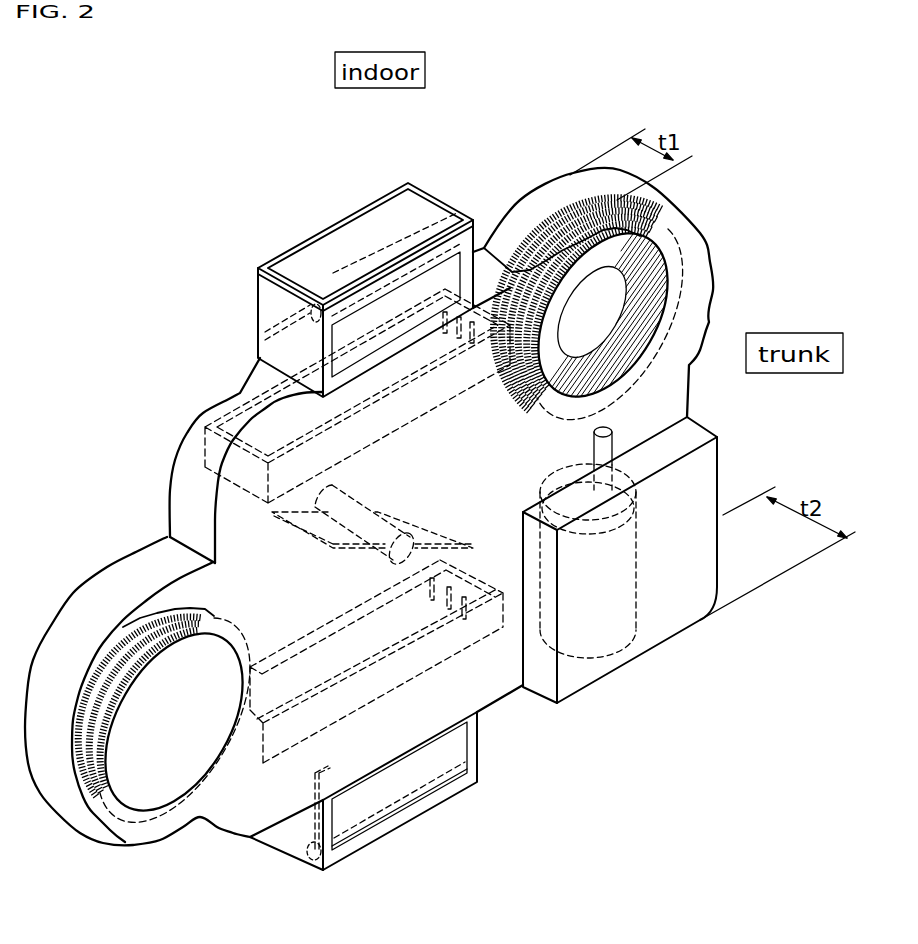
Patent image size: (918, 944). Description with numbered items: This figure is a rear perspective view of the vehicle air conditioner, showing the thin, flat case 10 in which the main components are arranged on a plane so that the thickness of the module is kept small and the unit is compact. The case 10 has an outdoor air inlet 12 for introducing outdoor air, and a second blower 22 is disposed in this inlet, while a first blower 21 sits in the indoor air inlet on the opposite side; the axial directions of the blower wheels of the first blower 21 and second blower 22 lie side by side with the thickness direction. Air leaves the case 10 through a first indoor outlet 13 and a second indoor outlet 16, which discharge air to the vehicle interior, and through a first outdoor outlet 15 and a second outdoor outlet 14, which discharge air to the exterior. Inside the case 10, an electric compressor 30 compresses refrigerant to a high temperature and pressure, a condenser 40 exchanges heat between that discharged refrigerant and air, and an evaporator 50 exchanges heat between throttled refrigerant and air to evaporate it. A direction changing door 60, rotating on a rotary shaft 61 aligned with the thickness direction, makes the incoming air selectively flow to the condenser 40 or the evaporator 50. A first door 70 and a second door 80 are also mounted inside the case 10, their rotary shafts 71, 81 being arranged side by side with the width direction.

The case 10 is at (168, 512).
The outdoor air inlet 12 is at (604, 312).
The first indoor outlet 13 is at (368, 234).
The second outdoor outlet 14 is at (392, 787).
The first outdoor outlet 15 is at (422, 288).
The second indoor outlet 16 is at (351, 870).
The first blower 21 is at (128, 620).
The second blower 22 is at (660, 305).
The compressor 30 is at (628, 633).
The condenser 40 is at (212, 447).
The evaporator 50 is at (487, 633).
The direction changing door 60 is at (313, 532).
The rotary shaft 61 is at (407, 537).
The first door 70 is at (290, 317).
The rotary shaft 71 is at (317, 303).
The second door 80 is at (315, 790).
The rotary shaft 81 is at (315, 858).